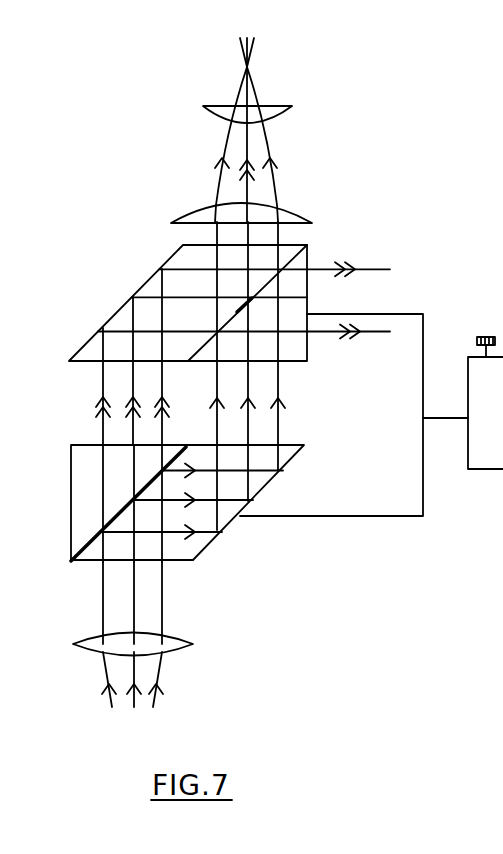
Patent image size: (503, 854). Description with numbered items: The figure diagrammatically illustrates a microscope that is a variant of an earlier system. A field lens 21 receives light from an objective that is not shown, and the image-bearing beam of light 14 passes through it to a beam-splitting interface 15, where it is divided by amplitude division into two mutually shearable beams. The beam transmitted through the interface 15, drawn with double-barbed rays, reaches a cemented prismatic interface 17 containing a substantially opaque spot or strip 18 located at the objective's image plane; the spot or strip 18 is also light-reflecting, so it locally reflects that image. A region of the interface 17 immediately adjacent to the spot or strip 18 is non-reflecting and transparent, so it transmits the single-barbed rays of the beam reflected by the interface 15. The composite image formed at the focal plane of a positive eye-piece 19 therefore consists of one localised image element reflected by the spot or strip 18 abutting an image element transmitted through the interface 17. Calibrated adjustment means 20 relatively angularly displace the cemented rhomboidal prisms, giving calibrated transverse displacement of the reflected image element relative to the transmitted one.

The image-bearing beam of light 14 is at (102, 695).
The beam-splitting interface 15 is at (100, 533).
The cemented prismatic interface 17 is at (297, 255).
The opaque spot or strip 18 is at (252, 298).
The positive eye-piece 19 is at (283, 150).
The calibrated adjustment means 20 is at (480, 470).
The field lens 21 is at (187, 640).